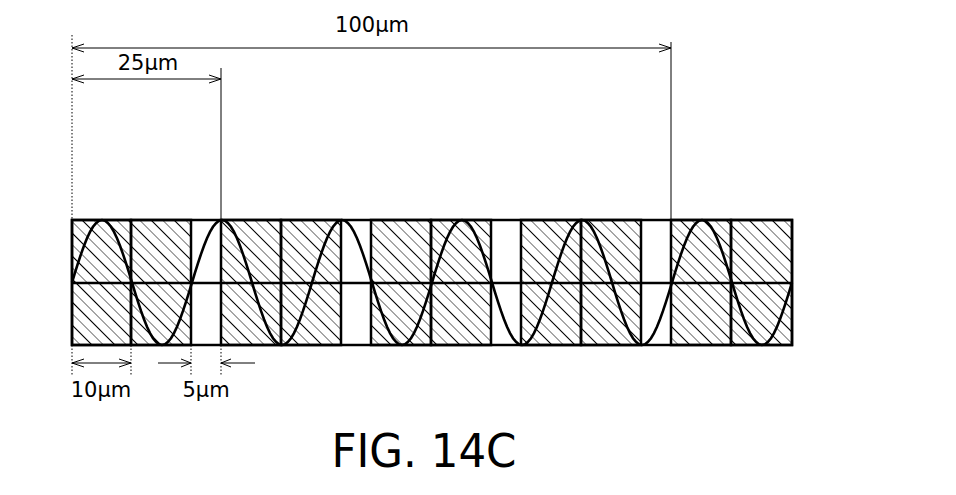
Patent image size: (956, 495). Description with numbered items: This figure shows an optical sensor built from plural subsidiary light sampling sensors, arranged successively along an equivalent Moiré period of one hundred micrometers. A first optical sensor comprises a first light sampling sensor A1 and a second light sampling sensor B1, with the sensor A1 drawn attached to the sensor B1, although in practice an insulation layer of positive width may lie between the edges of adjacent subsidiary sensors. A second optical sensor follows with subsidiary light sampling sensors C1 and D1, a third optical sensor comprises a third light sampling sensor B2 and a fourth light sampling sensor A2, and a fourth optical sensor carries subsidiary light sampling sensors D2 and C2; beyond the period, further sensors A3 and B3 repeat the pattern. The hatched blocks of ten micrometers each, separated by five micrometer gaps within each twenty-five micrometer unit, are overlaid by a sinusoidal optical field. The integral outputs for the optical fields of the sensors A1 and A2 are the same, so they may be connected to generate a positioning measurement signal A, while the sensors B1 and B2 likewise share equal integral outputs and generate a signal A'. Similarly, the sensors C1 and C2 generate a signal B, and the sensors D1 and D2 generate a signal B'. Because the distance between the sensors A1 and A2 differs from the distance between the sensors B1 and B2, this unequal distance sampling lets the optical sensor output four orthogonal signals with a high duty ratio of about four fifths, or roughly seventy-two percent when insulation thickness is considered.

The first light sampling sensor A1 is at (103, 219).
The second light sampling sensor B1 is at (160, 219).
The subsidiary light sampling sensor C1 is at (252, 219).
The subsidiary light sampling sensor D1 is at (310, 219).
The third light sampling sensor B2 is at (403, 219).
The fourth light sampling sensor A2 is at (460, 219).
The subsidiary light sampling sensor D2 is at (555, 219).
The subsidiary light sampling sensor C2 is at (610, 219).
The sub-pixel region A3 is at (703, 219).
The sub-pixel region B3 is at (760, 219).